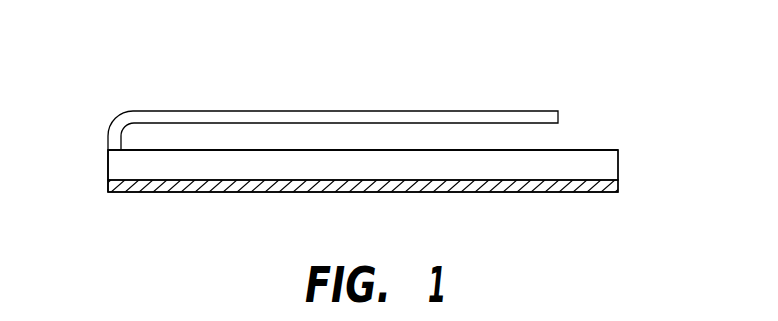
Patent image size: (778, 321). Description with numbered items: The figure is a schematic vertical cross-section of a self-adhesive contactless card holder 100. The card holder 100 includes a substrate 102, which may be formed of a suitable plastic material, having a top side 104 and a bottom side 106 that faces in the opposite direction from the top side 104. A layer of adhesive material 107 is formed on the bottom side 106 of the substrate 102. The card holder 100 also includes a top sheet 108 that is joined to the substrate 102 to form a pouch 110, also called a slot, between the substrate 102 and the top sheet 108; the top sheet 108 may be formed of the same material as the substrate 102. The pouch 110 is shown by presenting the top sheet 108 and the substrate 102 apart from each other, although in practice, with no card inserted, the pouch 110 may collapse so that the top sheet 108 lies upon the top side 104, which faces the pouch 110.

The self-adhesive contactless card holder 100 is at (572, 55).
The substrate 102 is at (618, 165).
The top side 104 is at (603, 147).
The bottom side 106 is at (572, 185).
The layer of adhesive material 107 is at (108, 181).
The top sheet 108 is at (181, 111).
The pouch 110 is at (530, 131).